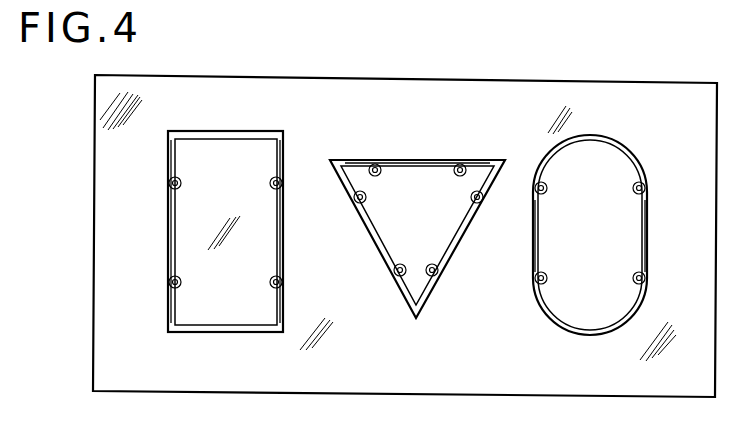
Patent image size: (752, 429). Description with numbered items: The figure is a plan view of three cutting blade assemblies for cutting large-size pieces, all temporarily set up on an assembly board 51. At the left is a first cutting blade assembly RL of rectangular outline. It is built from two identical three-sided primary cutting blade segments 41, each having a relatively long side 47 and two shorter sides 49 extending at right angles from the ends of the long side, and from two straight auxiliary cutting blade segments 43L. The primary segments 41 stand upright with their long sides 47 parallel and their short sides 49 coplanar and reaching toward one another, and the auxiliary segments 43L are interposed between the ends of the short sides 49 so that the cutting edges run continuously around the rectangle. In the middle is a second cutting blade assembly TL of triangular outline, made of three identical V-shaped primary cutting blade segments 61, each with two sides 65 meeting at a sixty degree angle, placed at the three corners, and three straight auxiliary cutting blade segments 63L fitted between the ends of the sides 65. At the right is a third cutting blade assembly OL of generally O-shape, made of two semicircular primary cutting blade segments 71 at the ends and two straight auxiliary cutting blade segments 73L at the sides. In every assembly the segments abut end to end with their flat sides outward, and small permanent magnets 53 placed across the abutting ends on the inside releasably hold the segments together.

The primary cutting blade segment 41 is at (168, 131).
The long side 47 is at (289, 114).
The short side 49 is at (170, 152).
The auxiliary cutting blade segment 43L is at (170, 252).
The permanent magnet 53 is at (270, 183).
The assembly board 51 is at (94, 175).
The primary cutting blade segment 61 is at (348, 158).
The side 65 is at (370, 166).
The auxiliary cutting blade segment 63L is at (430, 162).
The primary cutting blade segment 71 is at (668, 132).
The auxiliary cutting blade segment 73L is at (640, 228).
The first cutting blade assembly RL is at (242, 116).
The second cutting blade assembly TL is at (446, 128).
The third cutting blade assembly OL is at (608, 130).